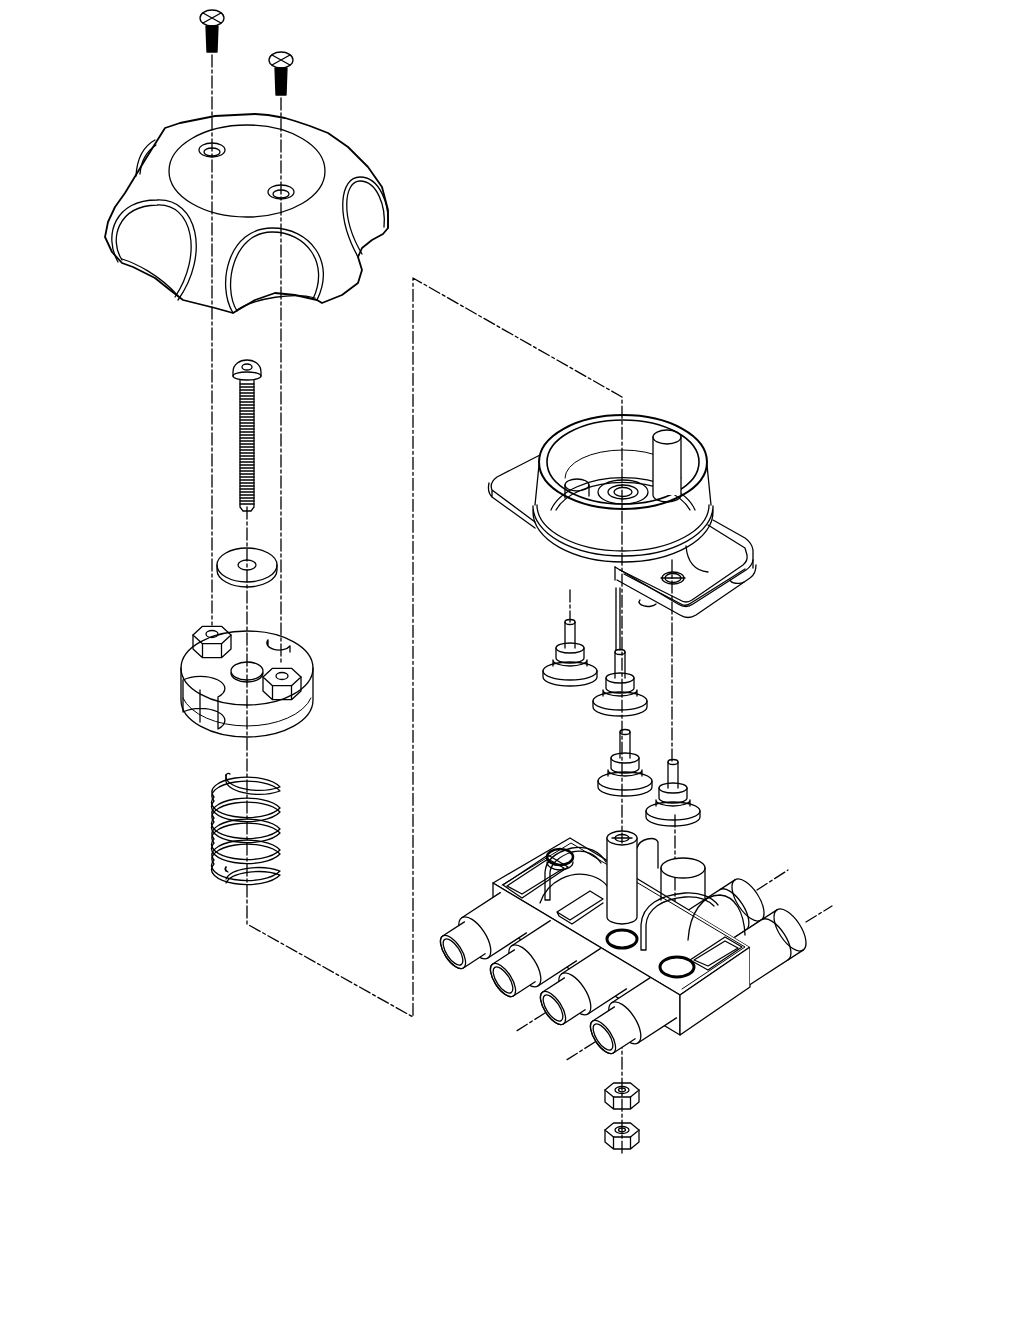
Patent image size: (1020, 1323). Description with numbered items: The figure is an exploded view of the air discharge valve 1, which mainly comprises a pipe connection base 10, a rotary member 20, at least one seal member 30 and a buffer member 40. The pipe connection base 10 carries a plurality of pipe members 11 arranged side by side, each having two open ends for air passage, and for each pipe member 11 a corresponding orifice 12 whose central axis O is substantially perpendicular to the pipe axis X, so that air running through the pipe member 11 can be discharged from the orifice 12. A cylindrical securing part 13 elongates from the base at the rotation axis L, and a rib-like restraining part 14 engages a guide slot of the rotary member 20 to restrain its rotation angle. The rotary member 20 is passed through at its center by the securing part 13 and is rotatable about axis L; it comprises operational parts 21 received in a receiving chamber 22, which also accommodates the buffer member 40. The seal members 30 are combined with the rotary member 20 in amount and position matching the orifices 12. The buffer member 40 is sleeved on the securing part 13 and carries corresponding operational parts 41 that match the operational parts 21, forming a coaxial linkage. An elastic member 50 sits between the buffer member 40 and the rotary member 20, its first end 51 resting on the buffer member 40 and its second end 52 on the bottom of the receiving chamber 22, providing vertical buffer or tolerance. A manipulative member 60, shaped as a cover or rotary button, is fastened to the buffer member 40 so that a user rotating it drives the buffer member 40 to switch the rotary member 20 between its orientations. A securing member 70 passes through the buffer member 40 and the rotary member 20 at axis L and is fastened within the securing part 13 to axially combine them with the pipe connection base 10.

The air discharge valve 1 is at (763, 89).
The pipe connection base 10 is at (611, 939).
The pipe member 11 is at (454, 964).
The orifice 12 is at (553, 847).
The securing part 13 is at (612, 832).
The restraining part 14 is at (517, 869).
The rotary member 20 is at (634, 503).
The operational part 21 is at (705, 451).
The receiving chamber 22 is at (597, 445).
The seal member 30 is at (563, 685).
The buffer member 40 is at (218, 677).
The corresponding operational part 41 is at (288, 645).
The elastic member 50 is at (265, 828).
The first end 51 is at (272, 783).
The second end 52 is at (228, 877).
The manipulative member 60 is at (342, 158).
The securing member 70 is at (255, 438).